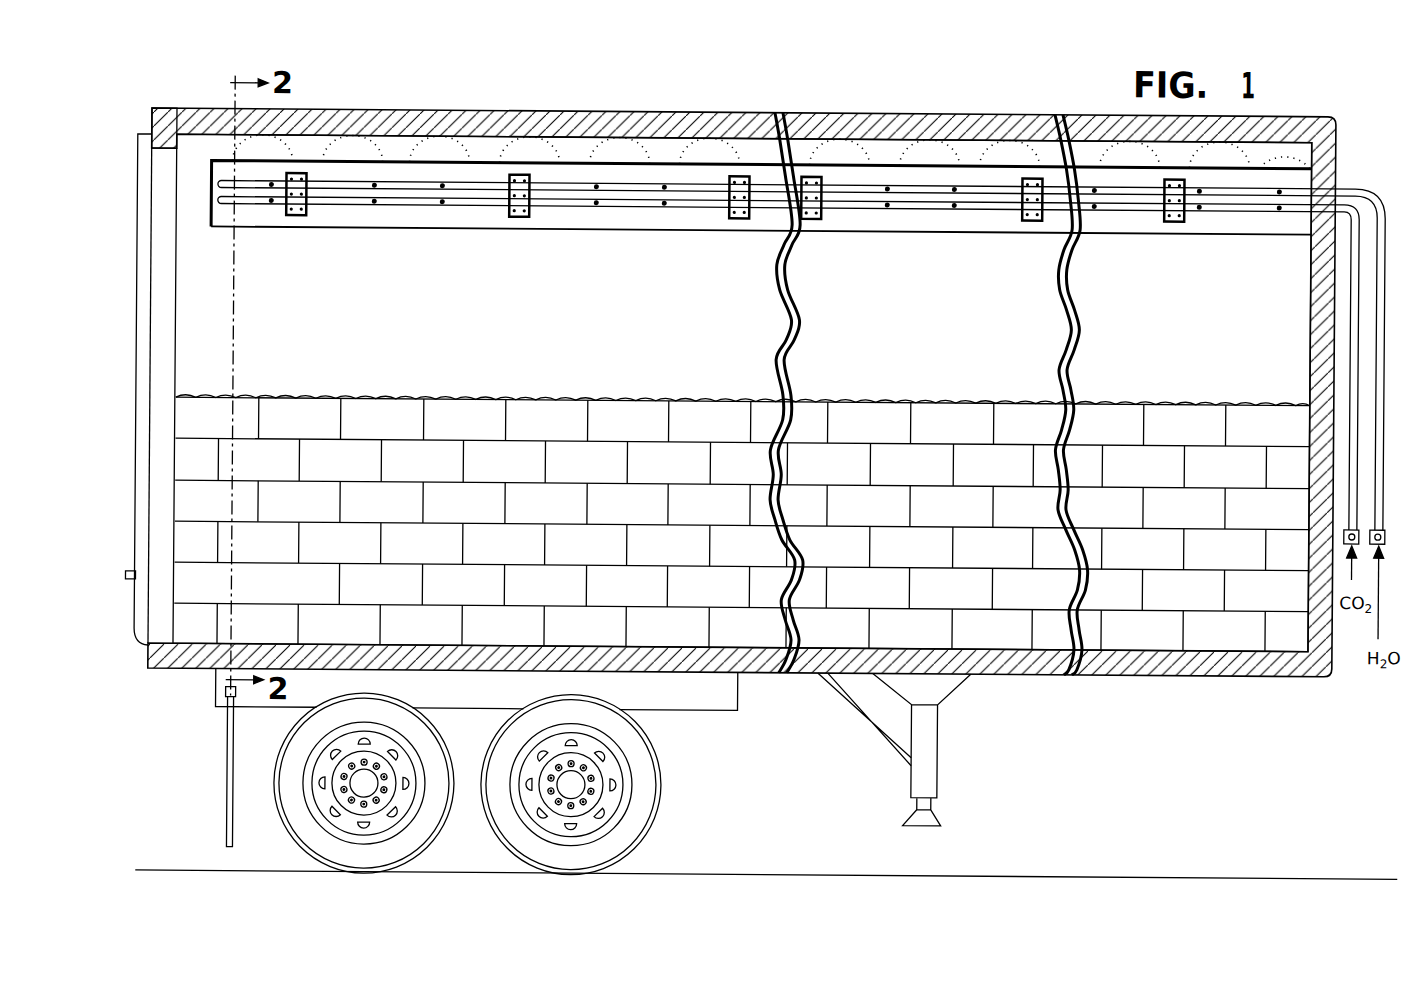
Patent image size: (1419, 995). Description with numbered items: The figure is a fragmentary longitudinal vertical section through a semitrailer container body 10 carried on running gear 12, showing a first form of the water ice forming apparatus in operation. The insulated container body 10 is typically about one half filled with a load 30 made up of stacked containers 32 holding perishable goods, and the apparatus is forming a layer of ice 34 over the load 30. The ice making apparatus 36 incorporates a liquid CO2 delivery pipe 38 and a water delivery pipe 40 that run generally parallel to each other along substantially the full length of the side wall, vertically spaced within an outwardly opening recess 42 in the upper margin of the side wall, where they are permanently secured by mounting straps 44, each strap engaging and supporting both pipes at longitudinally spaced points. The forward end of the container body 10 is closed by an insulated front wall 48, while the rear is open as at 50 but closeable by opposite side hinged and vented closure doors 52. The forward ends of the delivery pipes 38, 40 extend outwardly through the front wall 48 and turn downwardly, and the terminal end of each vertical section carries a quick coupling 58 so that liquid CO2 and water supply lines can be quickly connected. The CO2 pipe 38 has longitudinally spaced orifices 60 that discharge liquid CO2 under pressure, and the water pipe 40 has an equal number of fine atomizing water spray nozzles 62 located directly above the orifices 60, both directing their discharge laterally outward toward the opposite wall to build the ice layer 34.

The semitrailer container body 10 is at (920, 100).
The running gear 12 is at (672, 775).
The load 30 is at (868, 398).
The stacked containers 32 is at (455, 506).
The layer of ice 34 is at (518, 394).
The ice making apparatus 36 is at (488, 170).
The liquid CO2 delivery pipe 38 is at (848, 198).
The water delivery pipe 40 is at (360, 179).
The outwardly opening recess 42 is at (562, 225).
The mounting straps 44 is at (742, 171).
The insulated front wall 48 is at (1312, 231).
The open rear 50 is at (163, 165).
The closure doors 52 is at (141, 634).
The quick coupling 58 is at (1384, 521).
The orifices 60 is at (376, 196).
The atomizing water spray nozzles 62 is at (443, 180).